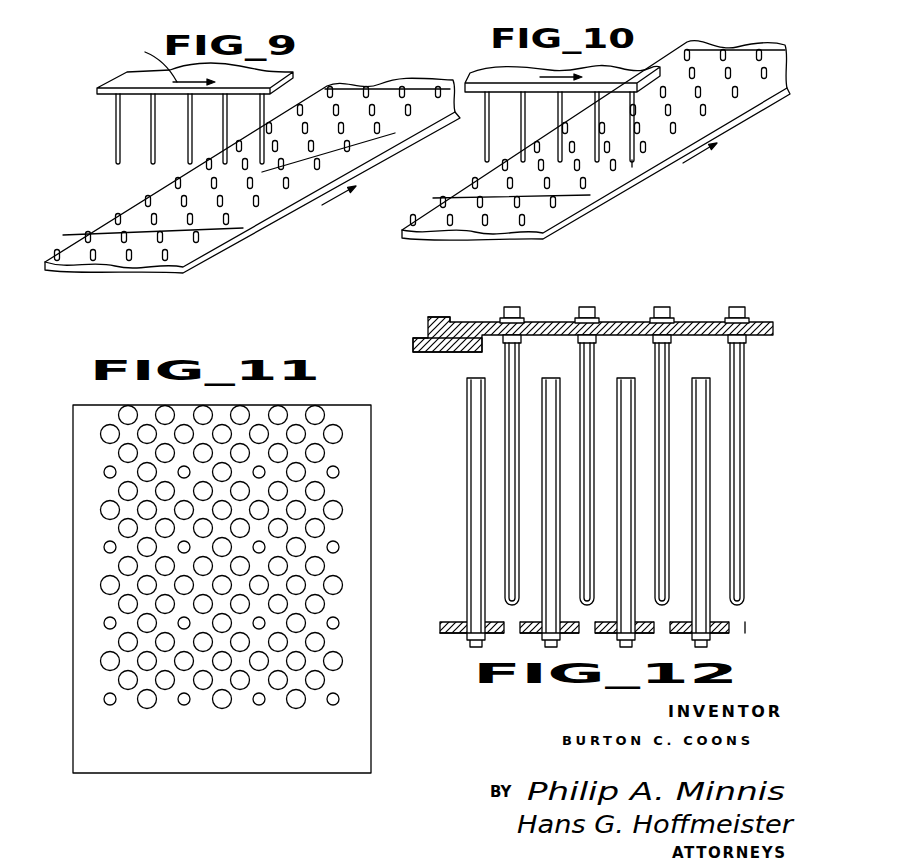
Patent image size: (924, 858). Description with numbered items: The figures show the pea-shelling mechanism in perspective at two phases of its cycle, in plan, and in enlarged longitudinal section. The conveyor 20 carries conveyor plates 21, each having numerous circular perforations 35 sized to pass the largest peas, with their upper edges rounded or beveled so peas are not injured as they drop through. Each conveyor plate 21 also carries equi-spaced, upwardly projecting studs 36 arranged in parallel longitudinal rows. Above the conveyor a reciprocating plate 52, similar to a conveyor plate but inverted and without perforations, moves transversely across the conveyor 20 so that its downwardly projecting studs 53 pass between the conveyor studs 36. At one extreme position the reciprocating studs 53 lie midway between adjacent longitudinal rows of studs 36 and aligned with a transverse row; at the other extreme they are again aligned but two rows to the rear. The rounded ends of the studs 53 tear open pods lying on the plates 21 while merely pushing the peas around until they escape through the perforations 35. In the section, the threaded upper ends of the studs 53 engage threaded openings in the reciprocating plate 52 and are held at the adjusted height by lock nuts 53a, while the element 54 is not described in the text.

In FIG. 9, the conveyor 20 is at (133, 202).
In FIG. 10, the conveyor 20 is at (452, 183).
In FIG. 11, the conveyor 20 is at (143, 767).
In FIG. 12, the conveyor 20 is at (448, 616).
In FIG. 9, the conveyor plate 21 is at (440, 72).
In FIG. 10, the conveyor plate 21 is at (757, 43).
In FIG. 11, the conveyor plate 21 is at (350, 412).
In FIG. 12, the conveyor plate 21 is at (450, 634).
In FIG. 11, the perforations 35 is at (312, 410).
In FIG. 12, the perforations 35 is at (505, 636).
In FIG. 9, the studs 36 is at (400, 90).
In FIG. 10, the studs 36 is at (703, 67).
In FIG. 11, the studs 36 is at (338, 618).
In FIG. 12, the studs 36 is at (470, 397).
In FIG. 9, the reciprocating plate 52 is at (120, 83).
In FIG. 10, the reciprocating plate 52 is at (508, 92).
In FIG. 12, the reciprocating plate 52 is at (688, 323).
In FIG. 9, the studs 53 is at (153, 118).
In FIG. 10, the studs 53 is at (560, 113).
In FIG. 12, the studs 53 is at (581, 360).
In FIG. 12, the lock nut 53a is at (512, 307).
In FIG. 12, the mounting bracket 54 is at (437, 318).